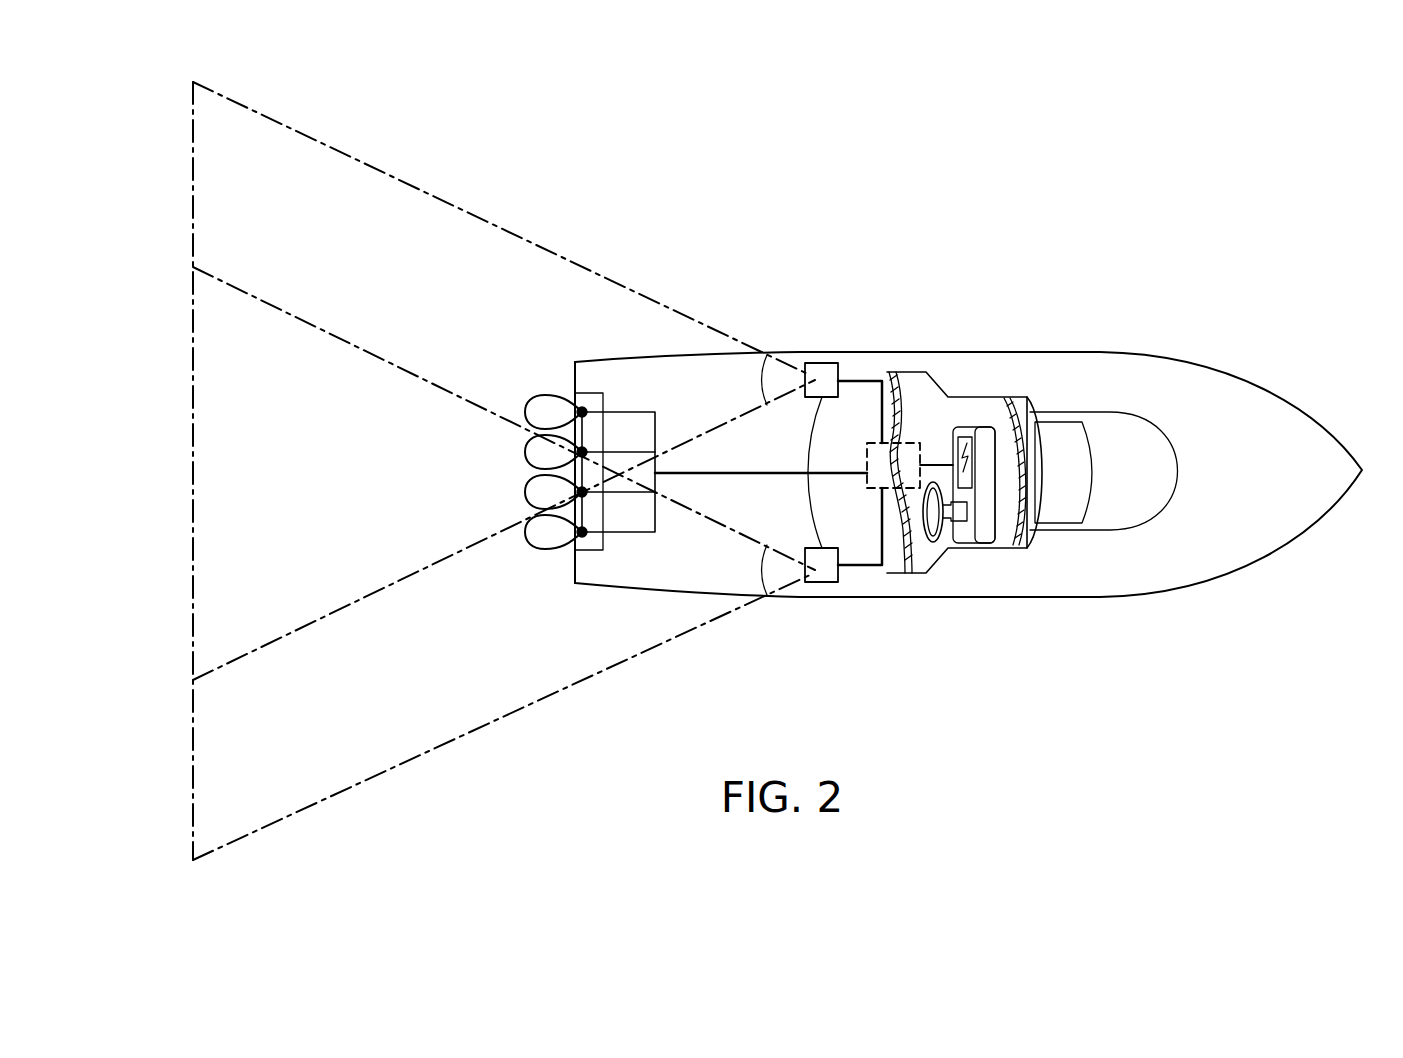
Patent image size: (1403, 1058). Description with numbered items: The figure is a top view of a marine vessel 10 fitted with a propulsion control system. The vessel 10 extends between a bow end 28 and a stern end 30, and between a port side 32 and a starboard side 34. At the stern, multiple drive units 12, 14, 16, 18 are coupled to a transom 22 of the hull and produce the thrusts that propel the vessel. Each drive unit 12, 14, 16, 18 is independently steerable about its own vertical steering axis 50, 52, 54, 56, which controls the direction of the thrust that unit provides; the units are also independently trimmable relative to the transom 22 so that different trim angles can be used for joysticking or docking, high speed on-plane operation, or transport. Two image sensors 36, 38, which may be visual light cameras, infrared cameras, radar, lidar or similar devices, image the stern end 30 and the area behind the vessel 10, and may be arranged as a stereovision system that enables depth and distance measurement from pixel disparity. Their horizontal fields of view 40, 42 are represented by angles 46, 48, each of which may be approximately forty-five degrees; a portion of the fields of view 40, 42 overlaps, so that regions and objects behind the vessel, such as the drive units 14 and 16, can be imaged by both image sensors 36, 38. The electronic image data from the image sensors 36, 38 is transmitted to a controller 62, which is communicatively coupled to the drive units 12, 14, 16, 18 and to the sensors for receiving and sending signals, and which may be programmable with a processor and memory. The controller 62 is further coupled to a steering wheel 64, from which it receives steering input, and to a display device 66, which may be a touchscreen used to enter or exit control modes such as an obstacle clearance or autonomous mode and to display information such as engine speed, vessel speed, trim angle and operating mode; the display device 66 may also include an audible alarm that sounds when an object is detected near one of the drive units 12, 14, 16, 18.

The marine vessel 10 is at (1292, 300).
The drive unit 12 is at (533, 543).
The drive unit 14 is at (530, 495).
The drive unit 16 is at (530, 455).
The drive unit 18 is at (538, 402).
The transom 22 is at (575, 380).
The bow end 28 is at (1308, 578).
The stern end 30 is at (158, 731).
The port side 32 is at (789, 246).
The starboard side 34 is at (687, 702).
The image sensor 36 is at (825, 582).
The image sensor 38 is at (822, 363).
The horizontal field of view 40 is at (457, 737).
The horizontal field of view 42 is at (457, 205).
The angle 46 is at (760, 570).
The angle 48 is at (760, 380).
The vertical steering axis 50 is at (582, 532).
The vertical steering axis 52 is at (582, 492).
The vertical steering axis 54 is at (582, 452).
The vertical steering axis 56 is at (582, 412).
The controller 62 is at (917, 440).
The steering wheel 64 is at (935, 545).
The display device 66 is at (965, 455).